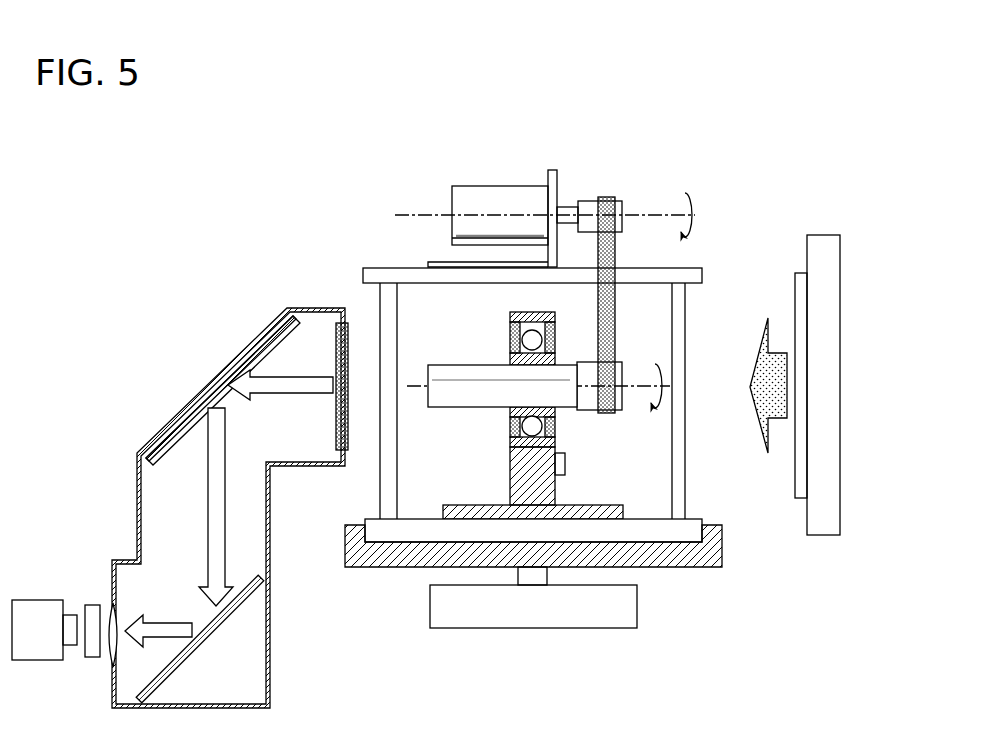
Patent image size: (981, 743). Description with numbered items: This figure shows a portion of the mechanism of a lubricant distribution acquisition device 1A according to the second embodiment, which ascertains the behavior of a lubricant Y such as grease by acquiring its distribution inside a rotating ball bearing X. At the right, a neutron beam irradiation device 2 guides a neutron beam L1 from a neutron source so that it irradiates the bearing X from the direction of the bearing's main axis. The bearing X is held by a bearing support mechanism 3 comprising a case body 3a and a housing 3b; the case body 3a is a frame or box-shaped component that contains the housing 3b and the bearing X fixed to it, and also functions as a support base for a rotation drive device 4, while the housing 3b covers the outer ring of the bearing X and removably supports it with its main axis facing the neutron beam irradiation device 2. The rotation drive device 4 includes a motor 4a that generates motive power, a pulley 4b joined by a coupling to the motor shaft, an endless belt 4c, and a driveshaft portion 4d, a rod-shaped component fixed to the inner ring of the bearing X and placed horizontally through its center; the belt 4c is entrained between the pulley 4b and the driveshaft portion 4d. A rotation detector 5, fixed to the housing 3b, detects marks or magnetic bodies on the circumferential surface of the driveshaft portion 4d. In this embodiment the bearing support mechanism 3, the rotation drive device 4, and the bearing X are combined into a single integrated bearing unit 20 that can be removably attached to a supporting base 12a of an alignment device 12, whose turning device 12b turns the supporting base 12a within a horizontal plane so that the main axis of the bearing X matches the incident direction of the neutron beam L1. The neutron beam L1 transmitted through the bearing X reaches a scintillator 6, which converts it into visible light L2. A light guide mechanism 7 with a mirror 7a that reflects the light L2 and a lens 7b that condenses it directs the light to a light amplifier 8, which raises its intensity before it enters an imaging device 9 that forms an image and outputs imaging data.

The lubricant distribution acquisition device 1A is at (690, 156).
The neutron beam irradiation device 2 is at (825, 235).
The bearing support mechanism 3 is at (707, 344).
The case body 3a is at (688, 485).
The housing 3b is at (525, 477).
The rotation drive device 4 is at (574, 178).
The motor 4a is at (499, 185).
The pulley 4b is at (618, 203).
The belt 4c is at (616, 318).
The driveshaft portion 4d is at (618, 396).
The rotation detector 5 is at (567, 463).
The scintillator 6 is at (346, 337).
The light guide mechanism 7 is at (172, 409).
The mirror 7a is at (225, 385).
The lens 7b is at (121, 617).
The light amplifier 8 is at (92, 660).
The imaging device 9 is at (33, 600).
The alignment device 12 is at (686, 574).
The supporting base 12a is at (722, 557).
The turning device 12b is at (570, 610).
The bearing unit 20 is at (416, 171).
The bearing X is at (506, 340).
The lubricant Y is at (553, 345).
The neutron beam L1 is at (777, 421).
The light L2 is at (283, 396).